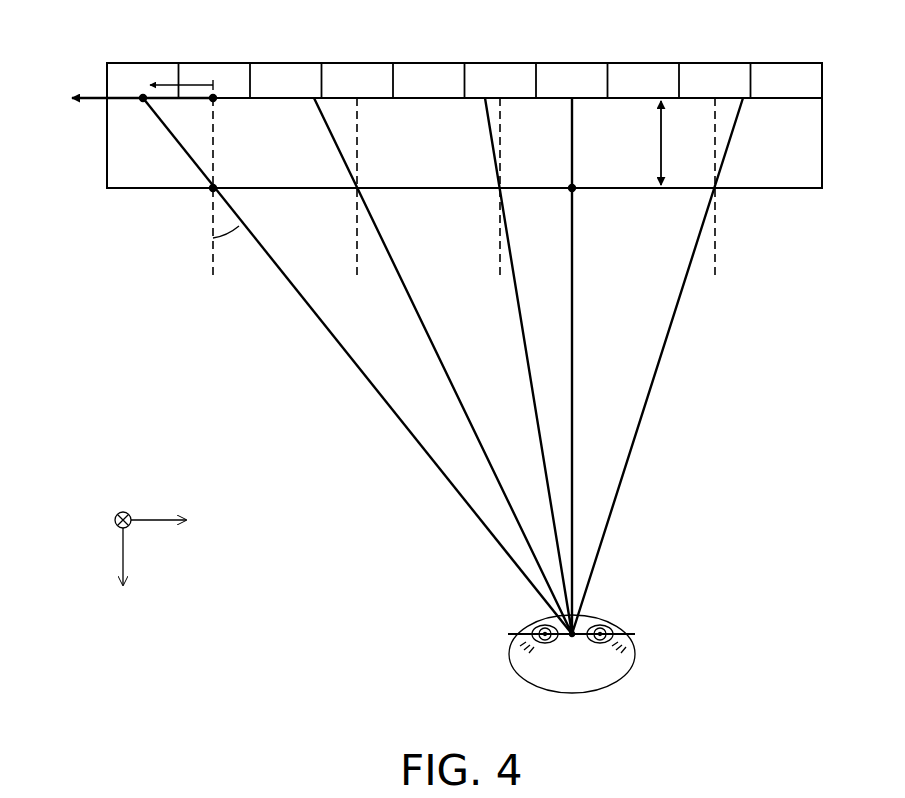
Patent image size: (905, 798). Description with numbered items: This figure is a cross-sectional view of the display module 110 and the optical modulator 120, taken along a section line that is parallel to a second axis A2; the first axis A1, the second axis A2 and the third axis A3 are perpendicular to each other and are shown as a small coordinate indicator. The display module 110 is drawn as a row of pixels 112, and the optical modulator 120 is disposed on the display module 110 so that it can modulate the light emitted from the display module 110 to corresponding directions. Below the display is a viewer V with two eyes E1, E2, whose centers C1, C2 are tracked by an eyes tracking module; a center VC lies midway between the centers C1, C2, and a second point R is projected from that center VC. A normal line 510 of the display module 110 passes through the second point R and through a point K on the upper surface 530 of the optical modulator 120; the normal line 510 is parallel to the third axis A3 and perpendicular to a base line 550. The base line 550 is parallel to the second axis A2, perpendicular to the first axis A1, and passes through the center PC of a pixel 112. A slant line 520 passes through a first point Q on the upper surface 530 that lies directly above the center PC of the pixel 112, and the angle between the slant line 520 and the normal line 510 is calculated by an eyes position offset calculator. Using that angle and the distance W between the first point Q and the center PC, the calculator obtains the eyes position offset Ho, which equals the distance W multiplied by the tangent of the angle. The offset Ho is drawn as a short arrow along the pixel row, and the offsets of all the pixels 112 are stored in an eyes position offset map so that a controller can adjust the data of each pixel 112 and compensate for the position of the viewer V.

The display module 110 is at (105, 75).
The pixel 112 is at (127, 74).
The optical modulator 120 is at (105, 166).
The normal line 510 is at (574, 336).
The slant line 520 is at (356, 372).
The upper surface 530 is at (140, 190).
The base line 550 is at (95, 102).
The eyes position offset Ho is at (179, 78).
The center of the pixel PC is at (229, 112).
The first point Q is at (201, 202).
The point K is at (582, 202).
The distance W is at (644, 143).
The first axis A1 is at (118, 513).
The second axis A2 is at (175, 520).
The third axis A3 is at (123, 573).
The viewer V is at (622, 682).
The center of the centers of the eyes VC is at (572, 634).
The second point R is at (572, 634).
The eye E1 is at (602, 642).
The eye E2 is at (544, 642).
The center of the eye C1 is at (606, 625).
The center of the eye C2 is at (541, 625).